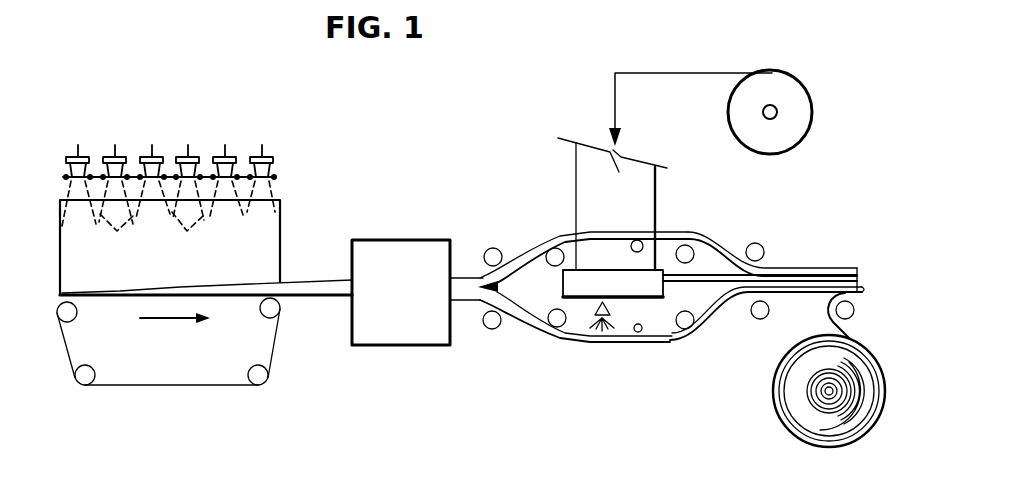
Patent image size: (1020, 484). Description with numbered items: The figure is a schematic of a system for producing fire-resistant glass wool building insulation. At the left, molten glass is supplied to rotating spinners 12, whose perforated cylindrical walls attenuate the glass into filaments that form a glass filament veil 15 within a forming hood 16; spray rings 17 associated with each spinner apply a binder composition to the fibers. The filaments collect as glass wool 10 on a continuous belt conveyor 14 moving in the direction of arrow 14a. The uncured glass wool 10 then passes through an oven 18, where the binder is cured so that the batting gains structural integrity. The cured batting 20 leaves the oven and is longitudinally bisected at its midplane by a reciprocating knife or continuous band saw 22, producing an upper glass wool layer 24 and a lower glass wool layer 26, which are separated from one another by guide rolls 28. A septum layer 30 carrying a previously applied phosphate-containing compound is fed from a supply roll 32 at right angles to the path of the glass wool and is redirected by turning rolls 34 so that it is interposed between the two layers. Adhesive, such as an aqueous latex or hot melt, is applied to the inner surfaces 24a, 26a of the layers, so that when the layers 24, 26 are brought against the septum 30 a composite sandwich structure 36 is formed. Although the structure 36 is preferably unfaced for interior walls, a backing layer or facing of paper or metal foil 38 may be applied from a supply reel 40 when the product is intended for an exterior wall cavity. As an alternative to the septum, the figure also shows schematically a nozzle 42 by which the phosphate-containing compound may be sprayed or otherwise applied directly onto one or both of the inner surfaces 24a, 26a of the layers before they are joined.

The glass wool 10 is at (295, 283).
The spinners 12 is at (146, 155).
The continuous belt conveyor 14 is at (276, 353).
The arrow 14a is at (158, 322).
The glass filament veil 15 is at (168, 217).
The forming hood 16 is at (283, 225).
The spray rings 17 is at (63, 176).
The oven 18 is at (410, 240).
The cured batting 20 is at (473, 303).
The reciprocating knife or continuous band saw 22 is at (494, 287).
The upper glass wool layer 24 is at (522, 246).
The inner surface of upper layer 24a is at (660, 233).
The lower glass wool layer 26 is at (528, 330).
The inner surface of lower layer 26a is at (638, 339).
The guide rolls 28 is at (488, 248).
The septum layer 30 is at (631, 212).
The supply roll 32 is at (781, 149).
The turning rolls 34 is at (613, 283).
The composite sandwich structure 36 is at (767, 271).
The backing layer or facing 38 is at (828, 313).
The supply reel 40 is at (783, 418).
The nozzle 42 is at (612, 310).